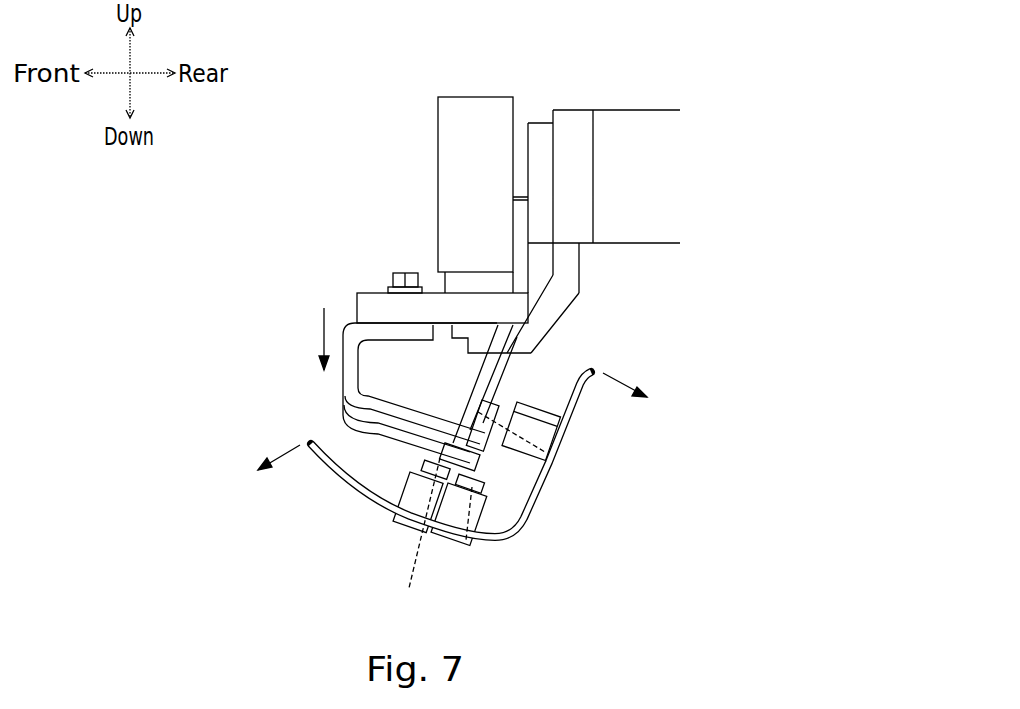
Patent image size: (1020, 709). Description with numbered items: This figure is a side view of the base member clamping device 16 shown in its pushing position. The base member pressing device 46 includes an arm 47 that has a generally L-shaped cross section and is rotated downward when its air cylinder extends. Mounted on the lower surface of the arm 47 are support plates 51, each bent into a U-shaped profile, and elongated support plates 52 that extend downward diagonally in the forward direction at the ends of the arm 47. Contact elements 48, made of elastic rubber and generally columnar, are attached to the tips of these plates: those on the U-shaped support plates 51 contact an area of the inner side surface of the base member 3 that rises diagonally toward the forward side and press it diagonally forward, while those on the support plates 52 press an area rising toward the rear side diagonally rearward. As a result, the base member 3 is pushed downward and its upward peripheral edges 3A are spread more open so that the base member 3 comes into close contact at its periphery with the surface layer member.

The drive unit 16 is at (388, 93).
The base member pressing device 46 is at (378, 200).
The arm 47 is at (372, 302).
The support plate 51 is at (345, 432).
The elongated support plate 52 is at (503, 383).
The contact element 48 is at (543, 438).
The base member 3 is at (537, 503).
The upward peripheral edge 3A is at (590, 374).